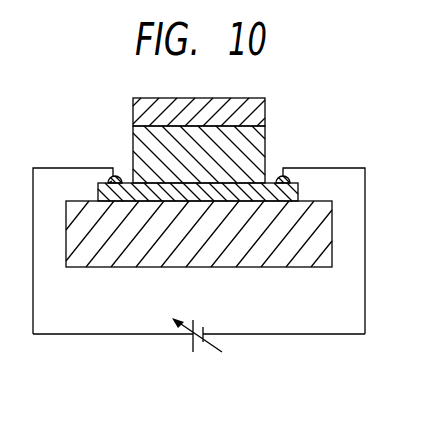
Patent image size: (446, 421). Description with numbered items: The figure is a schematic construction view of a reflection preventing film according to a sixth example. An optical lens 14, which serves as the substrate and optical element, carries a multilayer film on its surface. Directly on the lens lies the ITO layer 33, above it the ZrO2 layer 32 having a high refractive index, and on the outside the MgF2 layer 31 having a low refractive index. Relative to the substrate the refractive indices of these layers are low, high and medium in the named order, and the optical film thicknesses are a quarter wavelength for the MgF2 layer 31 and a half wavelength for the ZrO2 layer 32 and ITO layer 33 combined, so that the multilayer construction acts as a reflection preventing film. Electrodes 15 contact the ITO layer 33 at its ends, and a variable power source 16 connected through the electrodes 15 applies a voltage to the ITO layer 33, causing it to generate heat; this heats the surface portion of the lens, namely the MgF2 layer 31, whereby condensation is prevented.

The optical lens 14 is at (322, 236).
The electrodes 15 is at (105, 177).
The variable power source 16 is at (192, 342).
The MgF2 layer 31 is at (261, 110).
The ZrO2 layer 32 is at (255, 143).
The ITO layer 33 is at (293, 192).